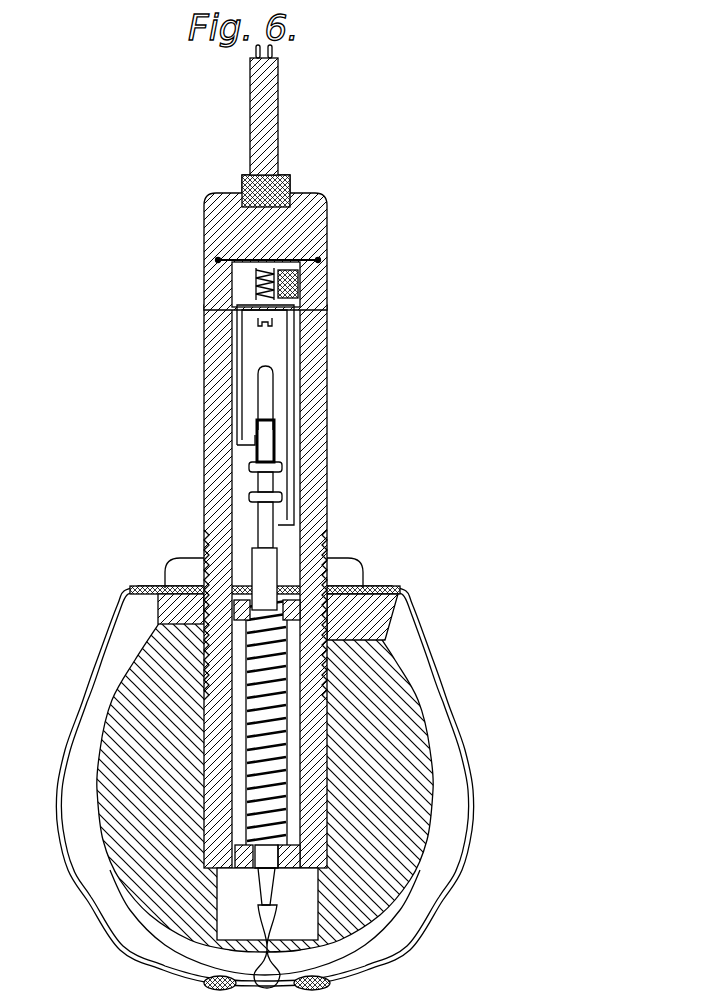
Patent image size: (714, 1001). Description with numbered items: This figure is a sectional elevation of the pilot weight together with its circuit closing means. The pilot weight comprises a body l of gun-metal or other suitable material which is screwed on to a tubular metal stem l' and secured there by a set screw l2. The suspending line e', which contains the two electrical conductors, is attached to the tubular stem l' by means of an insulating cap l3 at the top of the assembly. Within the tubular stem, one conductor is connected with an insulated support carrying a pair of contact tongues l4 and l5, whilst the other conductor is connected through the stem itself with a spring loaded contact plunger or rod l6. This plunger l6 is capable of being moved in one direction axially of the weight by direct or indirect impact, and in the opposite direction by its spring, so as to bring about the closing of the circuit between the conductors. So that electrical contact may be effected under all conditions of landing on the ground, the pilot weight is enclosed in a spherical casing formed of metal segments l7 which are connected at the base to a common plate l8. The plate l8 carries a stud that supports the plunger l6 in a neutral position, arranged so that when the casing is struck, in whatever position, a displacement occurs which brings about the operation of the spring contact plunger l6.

The line e' is at (293, 110).
The body l is at (299, 798).
The tubular metal stem l' is at (296, 586).
The set screw l2 is at (365, 618).
The insulating cap l3 is at (291, 241).
The contact tongue l4 is at (245, 400).
The contact tongue l5 is at (292, 498).
The spring loaded contact plunger l6 is at (258, 558).
The metal segments l7 is at (445, 913).
The common plate l8 is at (250, 985).